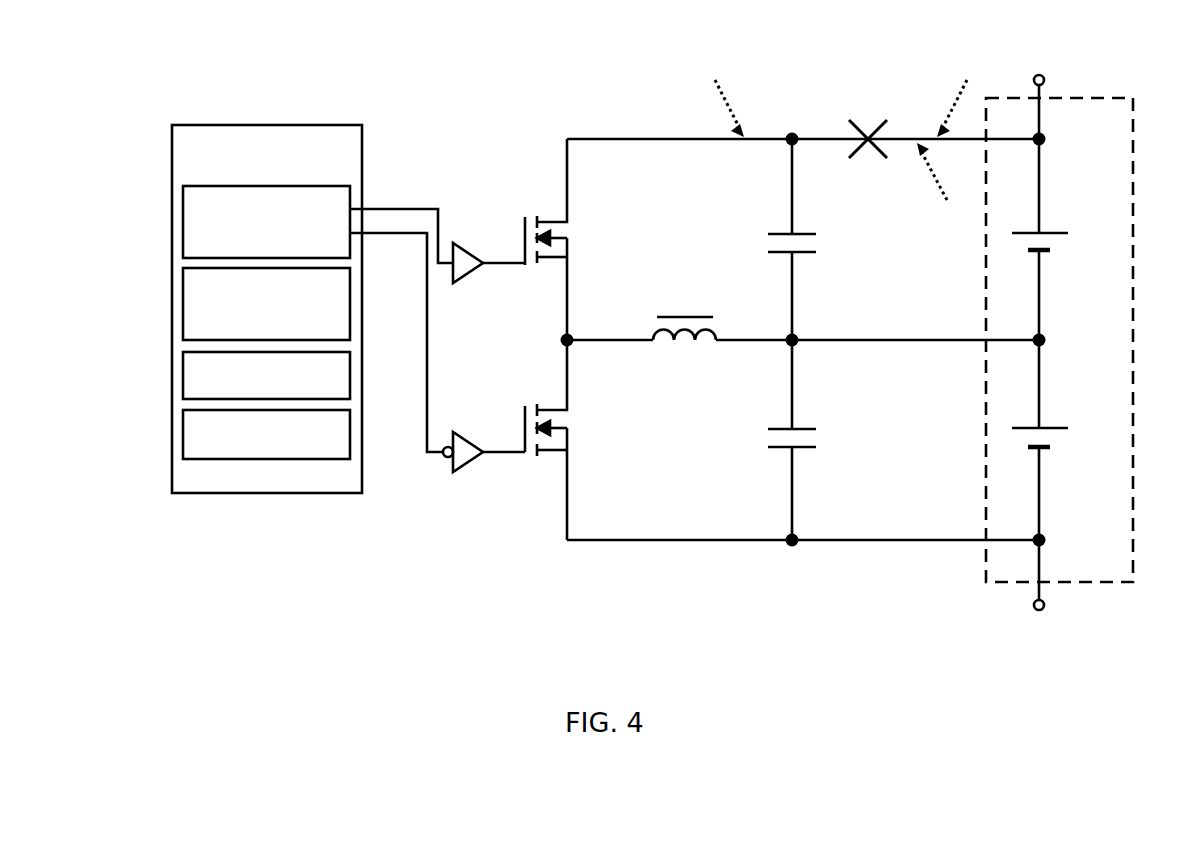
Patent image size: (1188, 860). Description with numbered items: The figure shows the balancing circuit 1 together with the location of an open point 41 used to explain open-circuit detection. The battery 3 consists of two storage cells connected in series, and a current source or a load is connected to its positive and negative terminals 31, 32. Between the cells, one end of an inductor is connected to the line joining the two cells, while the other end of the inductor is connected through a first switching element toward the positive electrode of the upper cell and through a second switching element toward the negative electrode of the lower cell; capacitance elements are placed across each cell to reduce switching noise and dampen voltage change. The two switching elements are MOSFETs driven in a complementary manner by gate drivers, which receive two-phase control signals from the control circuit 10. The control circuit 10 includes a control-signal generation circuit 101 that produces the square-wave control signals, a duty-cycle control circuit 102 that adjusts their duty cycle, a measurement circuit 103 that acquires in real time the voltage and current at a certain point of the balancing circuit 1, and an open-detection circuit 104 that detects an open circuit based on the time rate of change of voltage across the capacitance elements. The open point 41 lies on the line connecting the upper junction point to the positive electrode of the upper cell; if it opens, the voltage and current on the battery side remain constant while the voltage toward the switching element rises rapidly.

The balancing circuit 1 is at (555, 66).
The control circuit 10 is at (315, 125).
The control-signal generation circuit 101 is at (183, 227).
The duty-cycle control circuit 102 is at (183, 303).
The measurement circuit 103 is at (183, 375).
The open-detection circuit 104 is at (183, 433).
The battery 3 is at (1075, 98).
The positive terminal 31 is at (1040, 75).
The negative terminal 32 is at (1047, 608).
The open point 41 is at (868, 135).